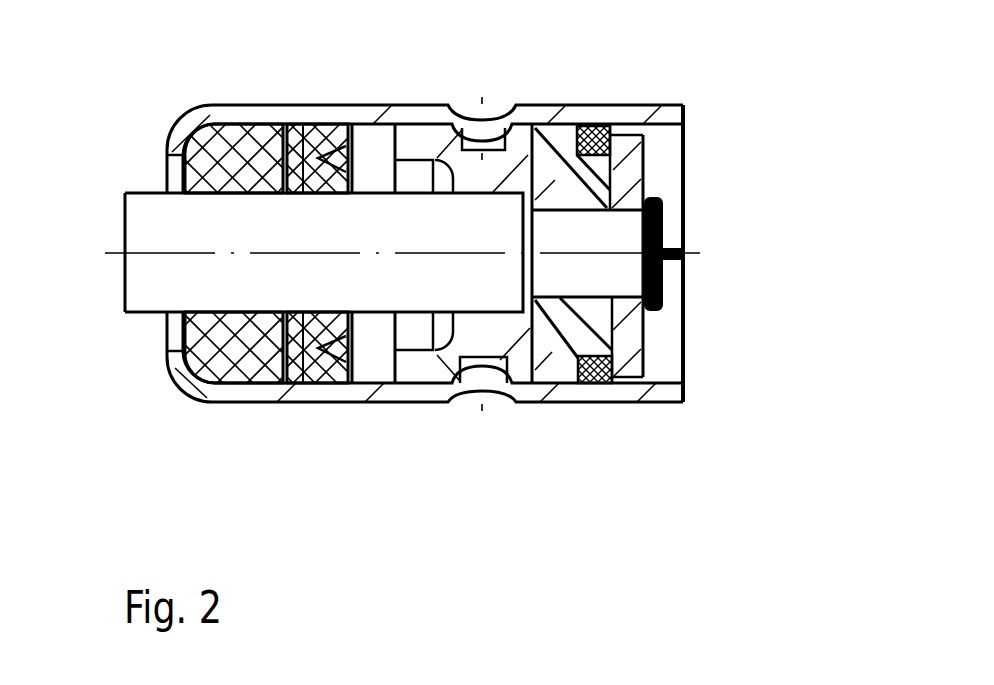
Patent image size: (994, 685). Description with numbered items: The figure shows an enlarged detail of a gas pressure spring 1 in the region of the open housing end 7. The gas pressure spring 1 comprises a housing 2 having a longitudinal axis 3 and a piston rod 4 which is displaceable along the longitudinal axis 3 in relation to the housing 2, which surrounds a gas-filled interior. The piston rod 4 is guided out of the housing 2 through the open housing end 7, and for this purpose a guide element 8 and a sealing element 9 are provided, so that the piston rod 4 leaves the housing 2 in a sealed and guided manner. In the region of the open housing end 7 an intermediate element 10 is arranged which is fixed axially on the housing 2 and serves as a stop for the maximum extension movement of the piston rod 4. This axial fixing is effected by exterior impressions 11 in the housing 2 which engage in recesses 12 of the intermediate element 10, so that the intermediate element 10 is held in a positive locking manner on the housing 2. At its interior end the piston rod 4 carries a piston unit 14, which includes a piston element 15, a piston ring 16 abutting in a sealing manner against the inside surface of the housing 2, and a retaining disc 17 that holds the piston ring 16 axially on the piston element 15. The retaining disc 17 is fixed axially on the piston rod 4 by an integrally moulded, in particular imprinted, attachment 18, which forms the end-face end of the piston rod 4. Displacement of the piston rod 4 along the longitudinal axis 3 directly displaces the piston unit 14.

The gas pressure spring 1 is at (725, 100).
The housing 2 is at (303, 388).
The longitudinal axis 3 is at (137, 250).
The piston rod 4 is at (135, 292).
The open housing end 7 is at (128, 109).
The guide element 8 is at (243, 140).
The sealing element 9 is at (295, 153).
The intermediate element 10 is at (522, 142).
The exterior impression 11 is at (483, 397).
The recess 12 is at (462, 146).
The piston unit 14 is at (586, 122).
The piston element 15 is at (543, 360).
The piston ring 16 is at (590, 375).
The retaining disc 17 is at (625, 345).
The attachment 18 is at (652, 285).